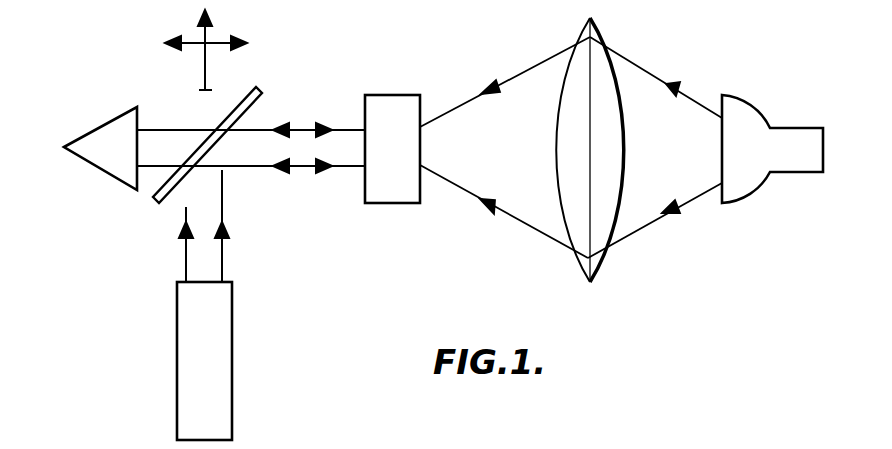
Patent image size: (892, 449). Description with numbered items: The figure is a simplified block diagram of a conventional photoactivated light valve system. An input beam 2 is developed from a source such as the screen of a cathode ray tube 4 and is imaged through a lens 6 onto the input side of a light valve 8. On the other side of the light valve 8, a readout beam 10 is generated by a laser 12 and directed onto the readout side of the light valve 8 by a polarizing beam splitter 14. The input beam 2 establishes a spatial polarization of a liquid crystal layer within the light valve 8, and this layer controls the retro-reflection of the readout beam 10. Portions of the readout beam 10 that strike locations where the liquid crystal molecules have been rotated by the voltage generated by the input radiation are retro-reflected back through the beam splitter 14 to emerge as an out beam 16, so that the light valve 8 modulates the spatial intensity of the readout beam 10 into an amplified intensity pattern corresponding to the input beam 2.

The input beam 2 is at (462, 104).
The cathode ray tube 4 is at (757, 107).
The lens 6 is at (610, 42).
The light valve 8 is at (390, 95).
The readout beam 10 is at (297, 168).
The laser 12 is at (232, 333).
The polarizing beam splitter 14 is at (247, 95).
The out beam 16 is at (175, 130).